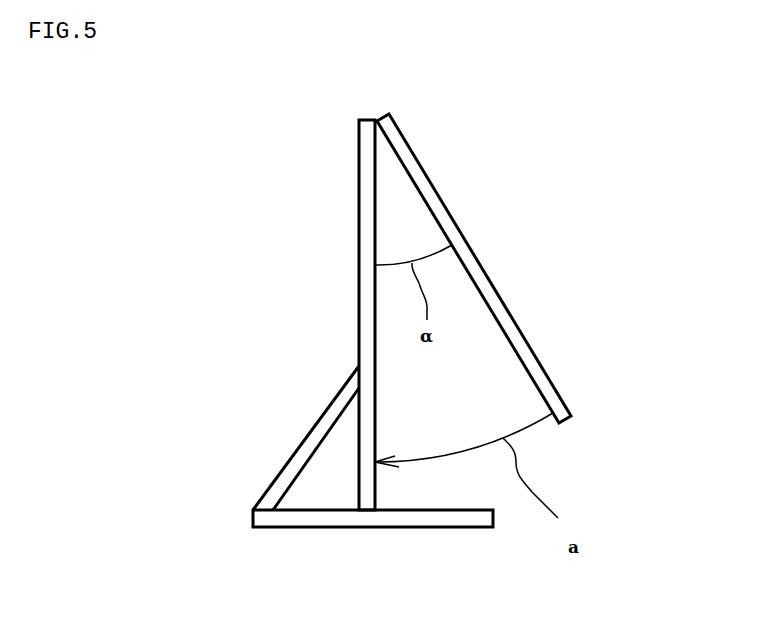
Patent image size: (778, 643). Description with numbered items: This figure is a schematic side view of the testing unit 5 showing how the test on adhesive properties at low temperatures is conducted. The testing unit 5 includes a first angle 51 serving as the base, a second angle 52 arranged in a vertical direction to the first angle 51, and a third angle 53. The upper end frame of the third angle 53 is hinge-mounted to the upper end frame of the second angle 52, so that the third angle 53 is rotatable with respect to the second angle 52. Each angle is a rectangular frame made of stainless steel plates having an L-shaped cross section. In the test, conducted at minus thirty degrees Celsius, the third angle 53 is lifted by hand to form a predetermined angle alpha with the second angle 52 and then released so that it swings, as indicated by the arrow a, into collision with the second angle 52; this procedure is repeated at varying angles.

The testing unit 5 is at (538, 202).
The first angle 51 is at (372, 527).
The second angle 52 is at (359, 252).
The third angle 53 is at (517, 318).